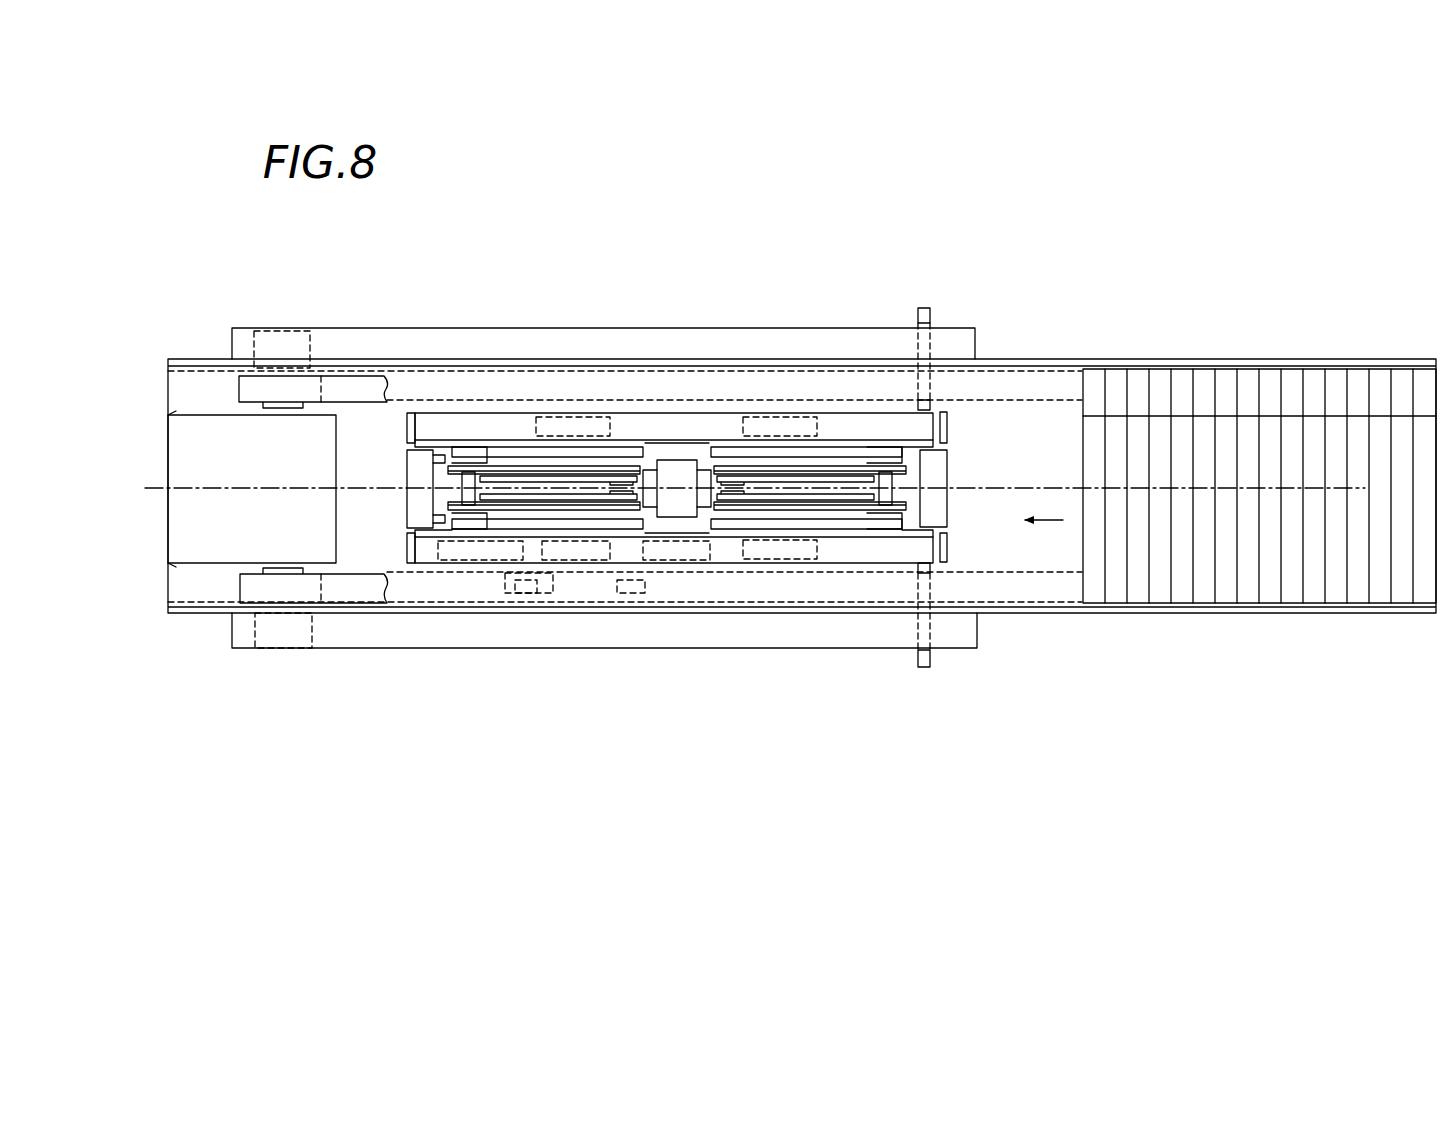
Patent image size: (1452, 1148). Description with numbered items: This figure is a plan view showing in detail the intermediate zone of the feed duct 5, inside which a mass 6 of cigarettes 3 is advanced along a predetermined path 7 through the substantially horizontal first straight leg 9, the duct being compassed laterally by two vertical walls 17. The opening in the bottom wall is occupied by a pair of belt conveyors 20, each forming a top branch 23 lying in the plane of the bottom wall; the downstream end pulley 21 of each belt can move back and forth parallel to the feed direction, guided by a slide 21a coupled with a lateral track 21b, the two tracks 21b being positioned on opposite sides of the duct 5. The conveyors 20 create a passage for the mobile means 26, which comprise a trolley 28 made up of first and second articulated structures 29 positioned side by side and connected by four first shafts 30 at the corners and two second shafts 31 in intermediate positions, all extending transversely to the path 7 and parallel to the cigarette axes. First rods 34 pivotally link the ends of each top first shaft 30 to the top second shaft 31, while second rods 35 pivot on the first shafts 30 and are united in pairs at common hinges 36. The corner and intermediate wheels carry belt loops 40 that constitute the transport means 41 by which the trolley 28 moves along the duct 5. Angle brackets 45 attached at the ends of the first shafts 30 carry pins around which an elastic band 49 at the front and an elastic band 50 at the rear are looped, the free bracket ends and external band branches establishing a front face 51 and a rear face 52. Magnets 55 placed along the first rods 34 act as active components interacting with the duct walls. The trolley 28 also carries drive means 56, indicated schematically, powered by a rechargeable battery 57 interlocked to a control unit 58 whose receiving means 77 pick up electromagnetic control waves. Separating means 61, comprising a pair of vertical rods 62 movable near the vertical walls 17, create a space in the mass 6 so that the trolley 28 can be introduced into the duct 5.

The cigarettes 3 is at (1225, 570).
The feed duct 5 is at (1420, 350).
The mass of cigarettes 6 is at (1142, 438).
The predetermined path 7 is at (1338, 485).
The first straight leg 9 is at (1132, 622).
The vertical walls 17 is at (1210, 355).
The belt conveyors 20 is at (232, 393).
The end pulley 21 is at (250, 388).
The slide 21a is at (263, 337).
The lateral track 21b is at (440, 327).
The top branch 23 is at (1040, 385).
The mobile means 26 is at (647, 442).
The trolley 28 is at (701, 405).
The articulated structures 29 is at (792, 441).
The first shafts 30 is at (467, 495).
The second shafts 31 is at (672, 503).
The first rods 34 is at (540, 462).
The second rods 35 is at (517, 471).
The common hinges 36 is at (622, 474).
The belt loops 40 is at (422, 422).
The transport means 41 is at (563, 410).
The angle brackets 45 is at (402, 432).
The elastic band 49 is at (402, 477).
The elastic band 50 is at (953, 498).
The front face 51 is at (402, 459).
The rear face 52 is at (950, 463).
The magnets 55 is at (774, 430).
The drive means 56 is at (687, 600).
The rechargeable battery 57 is at (583, 600).
The control unit 58 is at (458, 600).
The separating means 61 is at (927, 668).
The vertical rods 62 is at (924, 307).
The receiving means 77 is at (538, 600).